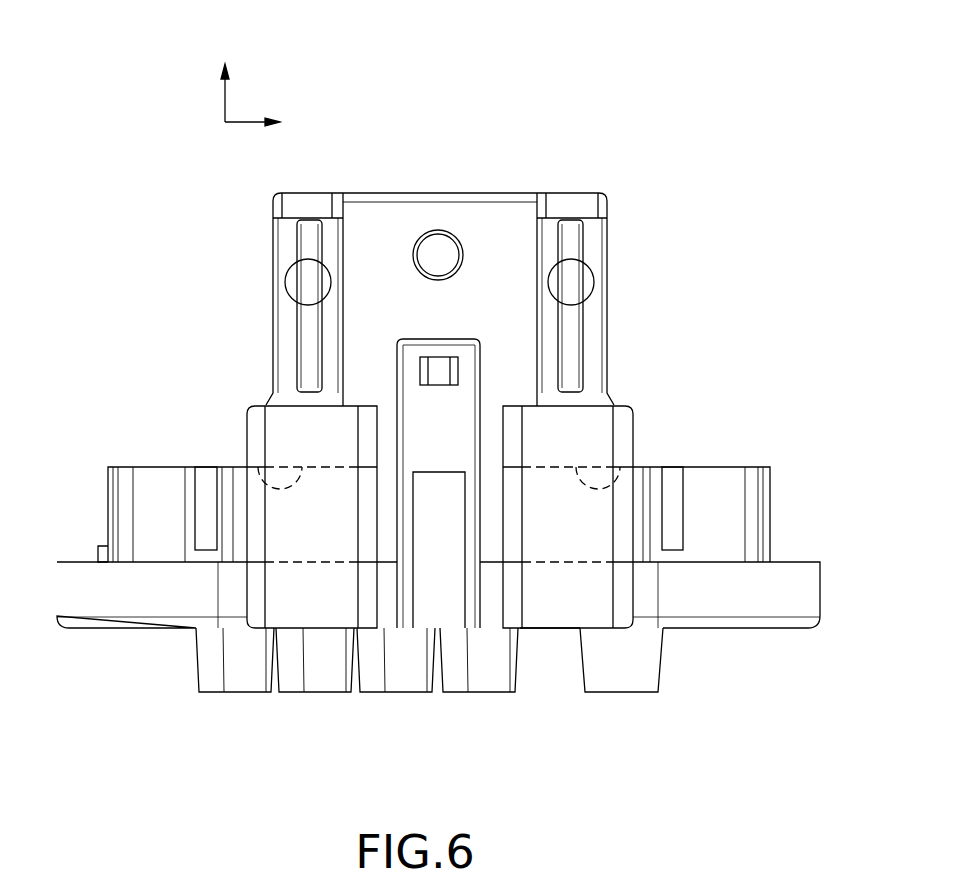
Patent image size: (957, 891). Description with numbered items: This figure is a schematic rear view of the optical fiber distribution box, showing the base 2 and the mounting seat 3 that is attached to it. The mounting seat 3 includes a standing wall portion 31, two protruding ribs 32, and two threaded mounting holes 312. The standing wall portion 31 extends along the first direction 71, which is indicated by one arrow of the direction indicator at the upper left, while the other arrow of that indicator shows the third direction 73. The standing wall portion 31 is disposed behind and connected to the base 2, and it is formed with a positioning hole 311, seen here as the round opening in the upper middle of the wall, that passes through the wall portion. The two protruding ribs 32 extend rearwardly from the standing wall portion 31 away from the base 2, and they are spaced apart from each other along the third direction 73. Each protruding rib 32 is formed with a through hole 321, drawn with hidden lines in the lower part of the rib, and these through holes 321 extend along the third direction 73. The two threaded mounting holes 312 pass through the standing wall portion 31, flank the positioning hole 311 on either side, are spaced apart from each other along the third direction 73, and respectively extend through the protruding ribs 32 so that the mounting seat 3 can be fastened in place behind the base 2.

The base 2 is at (712, 660).
The mounting seat 3 is at (625, 307).
The standing wall portion 31 is at (493, 212).
The positioning hole 311 is at (458, 252).
The threaded mounting holes 312 is at (307, 282).
The protruding ribs 32 is at (232, 388).
The through holes 321 is at (268, 480).
The first direction 71 is at (225, 76).
The third direction 73 is at (275, 122).